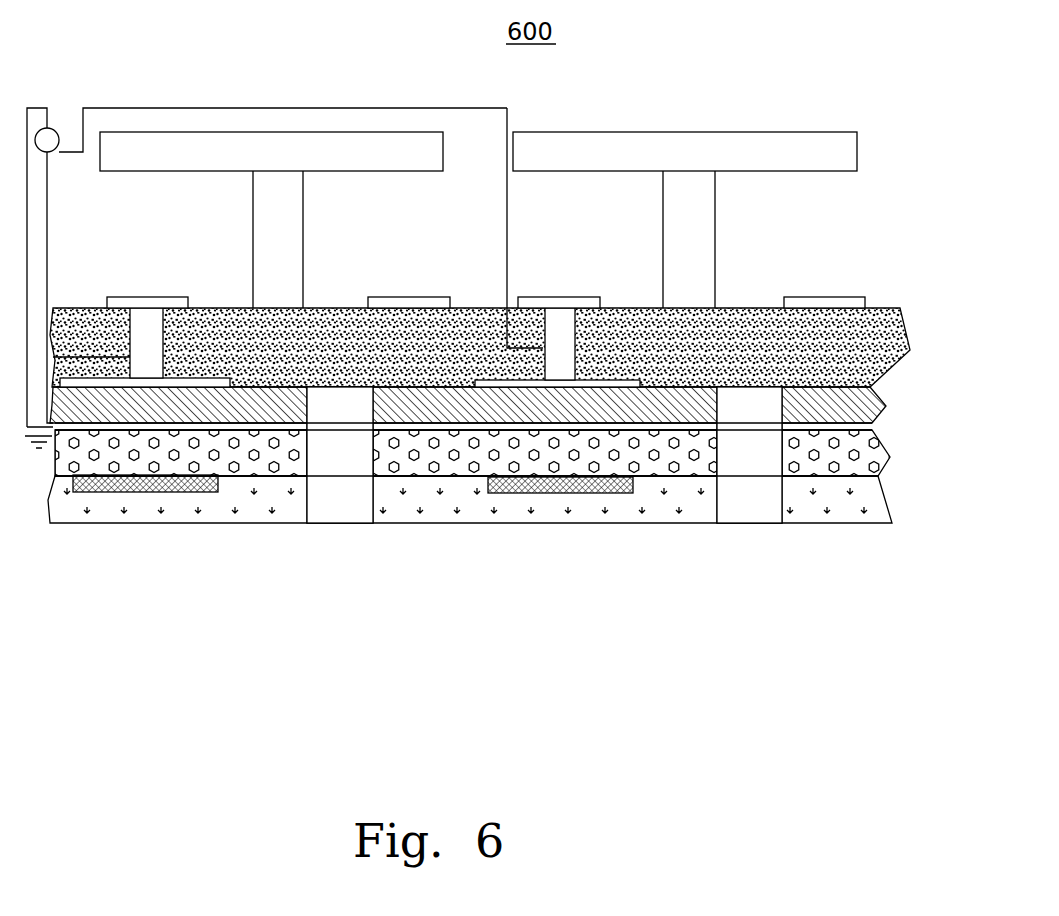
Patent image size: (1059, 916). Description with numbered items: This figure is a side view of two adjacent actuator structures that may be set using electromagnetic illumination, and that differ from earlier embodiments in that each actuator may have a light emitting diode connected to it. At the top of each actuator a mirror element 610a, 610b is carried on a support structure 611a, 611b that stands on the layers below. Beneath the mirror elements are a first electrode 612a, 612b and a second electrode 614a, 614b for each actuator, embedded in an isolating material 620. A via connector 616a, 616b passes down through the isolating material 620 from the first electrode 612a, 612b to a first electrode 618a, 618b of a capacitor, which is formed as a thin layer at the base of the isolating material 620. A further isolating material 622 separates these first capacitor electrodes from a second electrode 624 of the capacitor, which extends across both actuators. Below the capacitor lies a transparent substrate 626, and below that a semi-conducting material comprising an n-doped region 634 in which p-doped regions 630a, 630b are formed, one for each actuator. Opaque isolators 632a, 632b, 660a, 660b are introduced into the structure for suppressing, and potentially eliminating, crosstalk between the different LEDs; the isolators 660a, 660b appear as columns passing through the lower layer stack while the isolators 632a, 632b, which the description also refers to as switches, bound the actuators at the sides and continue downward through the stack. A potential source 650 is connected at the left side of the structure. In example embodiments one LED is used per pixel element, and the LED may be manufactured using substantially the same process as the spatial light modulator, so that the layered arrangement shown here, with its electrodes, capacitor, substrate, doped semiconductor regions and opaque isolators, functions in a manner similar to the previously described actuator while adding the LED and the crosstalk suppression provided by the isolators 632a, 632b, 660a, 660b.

The mirror element 610a is at (271, 98).
The mirror element 610b is at (685, 94).
The support structure 611a is at (379, 239).
The support structure 611b is at (770, 239).
The first electrode 612a is at (157, 259).
The first electrode 612b is at (570, 258).
The second electrode 614a is at (431, 263).
The second electrode 614b is at (849, 267).
The via connector 616a is at (109, 313).
The via connector 616b is at (609, 310).
The first electrode of capacitor 618a is at (154, 323).
The first electrode of capacitor 618b is at (628, 327).
The isolating material 620 is at (480, 460).
The isolating material 622 is at (468, 515).
The second electrode of capacitor 624 is at (463, 536).
The transparent substrate 626 is at (473, 498).
The p-doped region 630a is at (144, 540).
The p-doped region 630b is at (548, 556).
The opaque isolator 632a is at (210, 392).
The opaque isolator 632b is at (644, 377).
The n-doped region 634 is at (470, 549).
The potential source 650 is at (79, 229).
The opaque isolator 660a is at (281, 509).
The opaque isolator 660b is at (760, 480).